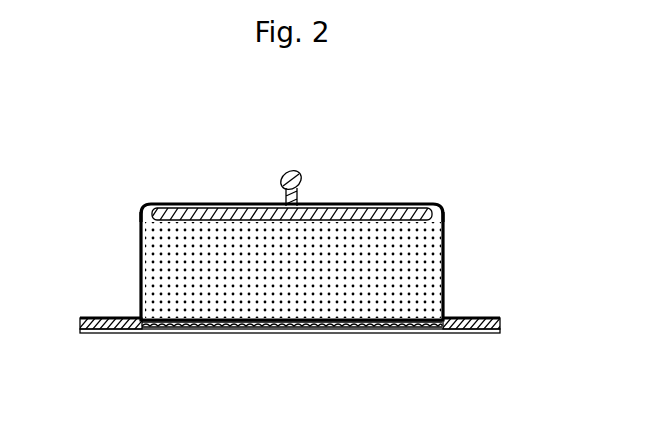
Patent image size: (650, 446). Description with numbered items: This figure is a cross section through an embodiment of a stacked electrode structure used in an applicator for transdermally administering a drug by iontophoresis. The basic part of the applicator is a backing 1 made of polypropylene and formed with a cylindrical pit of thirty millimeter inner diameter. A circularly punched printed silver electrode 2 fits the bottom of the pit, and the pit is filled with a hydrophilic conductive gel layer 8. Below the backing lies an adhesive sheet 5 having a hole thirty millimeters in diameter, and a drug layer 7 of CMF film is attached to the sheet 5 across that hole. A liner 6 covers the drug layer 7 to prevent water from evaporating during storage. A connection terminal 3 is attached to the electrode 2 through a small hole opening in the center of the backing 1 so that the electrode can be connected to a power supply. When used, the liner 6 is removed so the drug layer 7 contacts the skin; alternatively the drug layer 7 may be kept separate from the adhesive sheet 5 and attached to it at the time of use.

The backing 1 is at (443, 213).
The printed silver electrode 2 is at (157, 205).
The connection terminal 3 is at (303, 181).
The adhesive sheet 5 is at (500, 331).
The liner 6 is at (375, 333).
The drug layer 7 is at (357, 323).
The hydrophilic conductive gel layer 8 is at (150, 268).